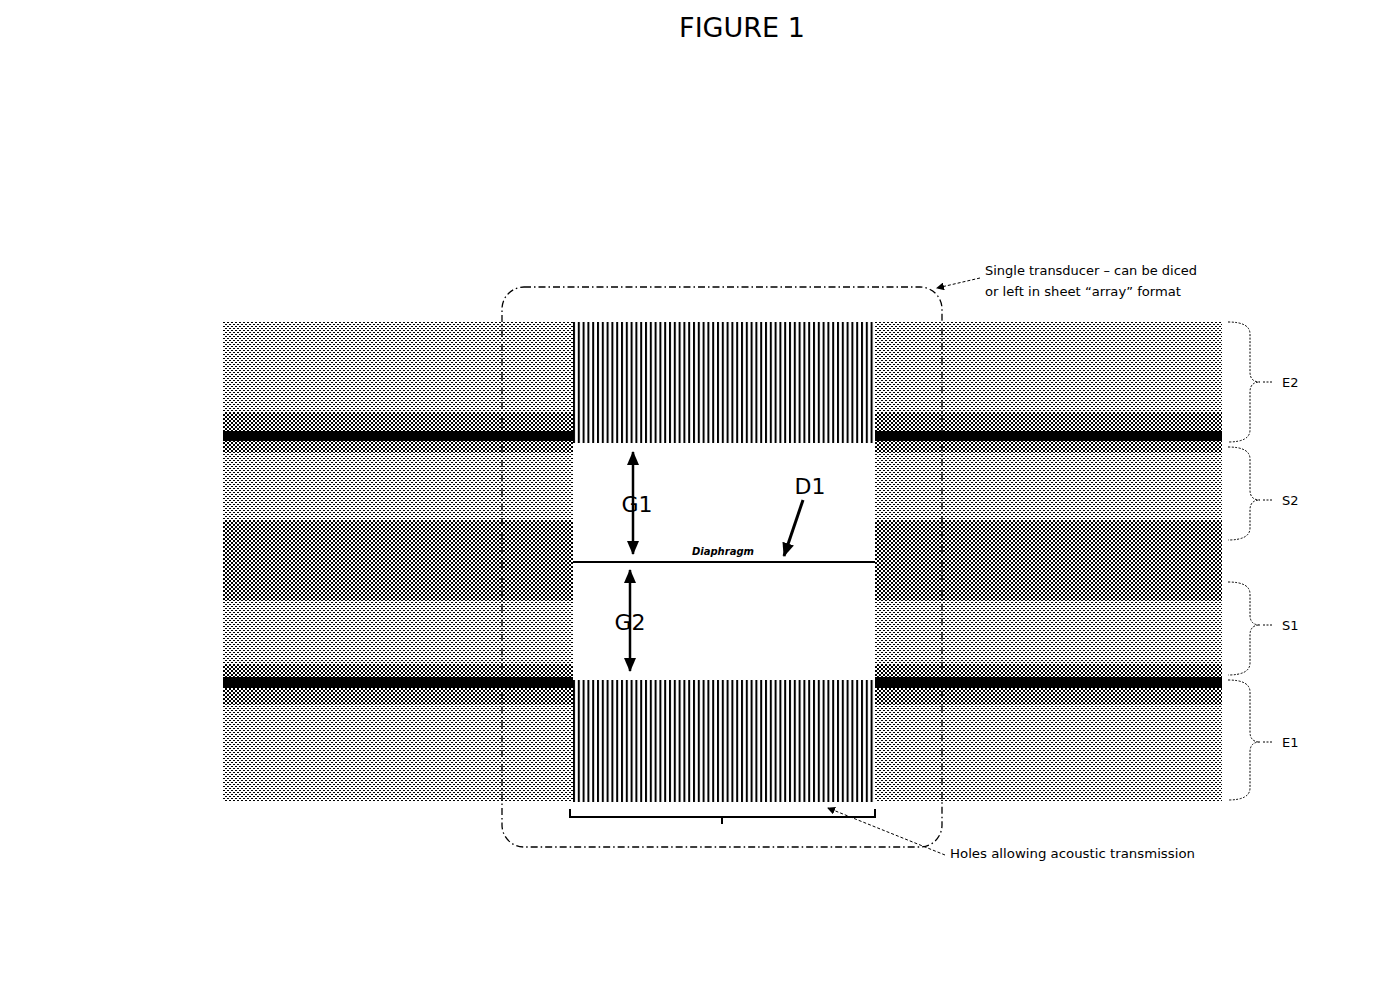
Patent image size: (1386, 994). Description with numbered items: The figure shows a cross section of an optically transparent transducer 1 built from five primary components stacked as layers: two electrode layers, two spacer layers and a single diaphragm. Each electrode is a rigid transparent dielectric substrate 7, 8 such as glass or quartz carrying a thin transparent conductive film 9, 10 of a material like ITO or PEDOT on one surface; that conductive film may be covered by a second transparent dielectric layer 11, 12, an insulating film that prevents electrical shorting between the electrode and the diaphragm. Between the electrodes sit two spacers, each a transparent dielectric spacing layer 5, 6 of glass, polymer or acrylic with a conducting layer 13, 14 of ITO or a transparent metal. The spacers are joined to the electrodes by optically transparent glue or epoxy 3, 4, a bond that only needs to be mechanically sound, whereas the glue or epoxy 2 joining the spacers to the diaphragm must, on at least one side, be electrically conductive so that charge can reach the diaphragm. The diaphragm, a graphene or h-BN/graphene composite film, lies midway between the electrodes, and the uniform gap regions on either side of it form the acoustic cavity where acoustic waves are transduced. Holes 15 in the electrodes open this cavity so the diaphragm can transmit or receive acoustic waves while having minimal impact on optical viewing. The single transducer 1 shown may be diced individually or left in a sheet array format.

The transducer 1 is at (940, 205).
The glue/epoxy 2 is at (1195, 562).
The glue/epoxy 3 is at (1200, 447).
The glue/epoxy 4 is at (1200, 672).
The dielectric material of spacer 5 is at (272, 488).
The dielectric material of spacer 6 is at (273, 635).
The dielectric material of electrode 7 is at (1190, 352).
The dielectric material of electrode 8 is at (1192, 773).
The conductive layer of electrode layers 9 is at (1200, 425).
The conductive layer of electrode layers 10 is at (1200, 695).
The second dielectric layer of electrode layers 11 is at (270, 436).
The second dielectric layer of electrode layers 12 is at (272, 681).
The conductive layer of spacer layers 13 is at (272, 528).
The conductive layer of spacer layers 14 is at (273, 590).
The openings in electrodes 15 is at (728, 835).